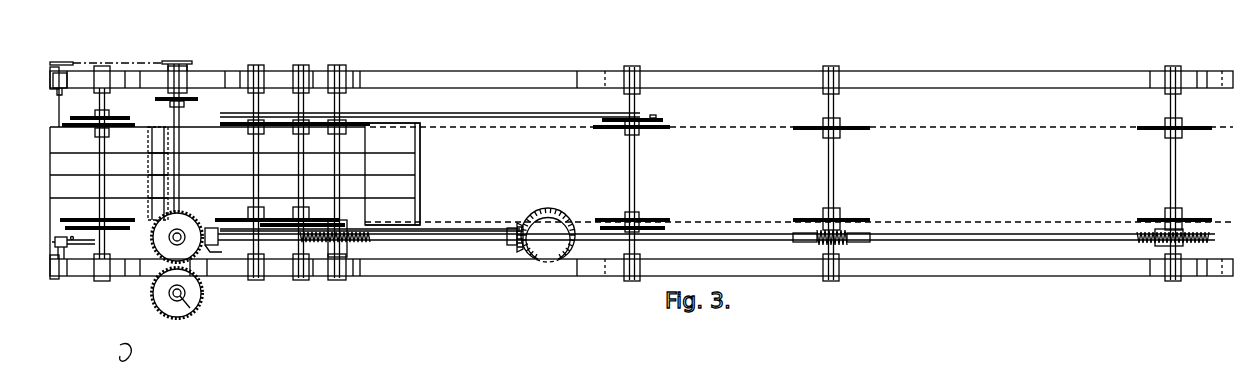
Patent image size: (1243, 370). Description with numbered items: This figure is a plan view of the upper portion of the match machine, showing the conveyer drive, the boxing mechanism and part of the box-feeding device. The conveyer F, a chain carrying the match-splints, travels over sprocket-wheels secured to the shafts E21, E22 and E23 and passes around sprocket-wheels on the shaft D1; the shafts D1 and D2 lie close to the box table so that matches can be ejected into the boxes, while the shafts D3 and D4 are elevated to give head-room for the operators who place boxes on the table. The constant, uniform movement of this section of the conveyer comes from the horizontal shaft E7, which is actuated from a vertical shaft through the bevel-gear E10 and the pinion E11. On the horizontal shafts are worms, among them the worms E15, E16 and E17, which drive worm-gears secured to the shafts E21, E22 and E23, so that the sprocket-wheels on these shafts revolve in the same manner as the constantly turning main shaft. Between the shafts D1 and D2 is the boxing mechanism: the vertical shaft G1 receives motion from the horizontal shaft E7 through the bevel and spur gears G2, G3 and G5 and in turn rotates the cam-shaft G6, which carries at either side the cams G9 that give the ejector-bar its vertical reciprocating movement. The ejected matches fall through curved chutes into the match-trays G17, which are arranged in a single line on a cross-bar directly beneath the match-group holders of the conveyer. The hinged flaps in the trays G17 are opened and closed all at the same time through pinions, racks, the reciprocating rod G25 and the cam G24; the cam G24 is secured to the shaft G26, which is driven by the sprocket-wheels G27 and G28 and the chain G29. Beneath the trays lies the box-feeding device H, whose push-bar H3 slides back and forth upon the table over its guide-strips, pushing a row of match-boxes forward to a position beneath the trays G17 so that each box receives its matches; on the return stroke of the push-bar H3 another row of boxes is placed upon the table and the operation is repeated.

The sprocket-wheel G28 is at (73, 62).
The chain G29 is at (125, 63).
The sprocket-wheel G27 is at (180, 61).
The shaft G26 is at (59, 104).
The cams G9 is at (190, 101).
The shaft E21 is at (340, 100).
The shaft D4 is at (633, 100).
The shaft E22 is at (834, 103).
The shaft E23 is at (1170, 105).
The conveyer F is at (972, 128).
The match-trays G17 is at (150, 187).
The cam-shaft G6 is at (180, 162).
The shaft D2 is at (259, 162).
The shaft D3 is at (304, 162).
The push-bar H3 is at (420, 160).
The box H is at (420, 187).
The shaft D1 is at (105, 185).
The pinion E11 is at (518, 222).
The bevel-gear E10 is at (548, 208).
The worm E15 is at (350, 242).
The horizontal shaft E7 is at (445, 237).
The worm E16 is at (848, 245).
The worm E17 is at (1185, 243).
The cam G24 is at (68, 238).
The reciprocating rod G25 is at (87, 235).
The gear G3 is at (200, 258).
The gear G5 is at (212, 246).
The gear G2 is at (168, 313).
The vertical shaft G1 is at (186, 302).